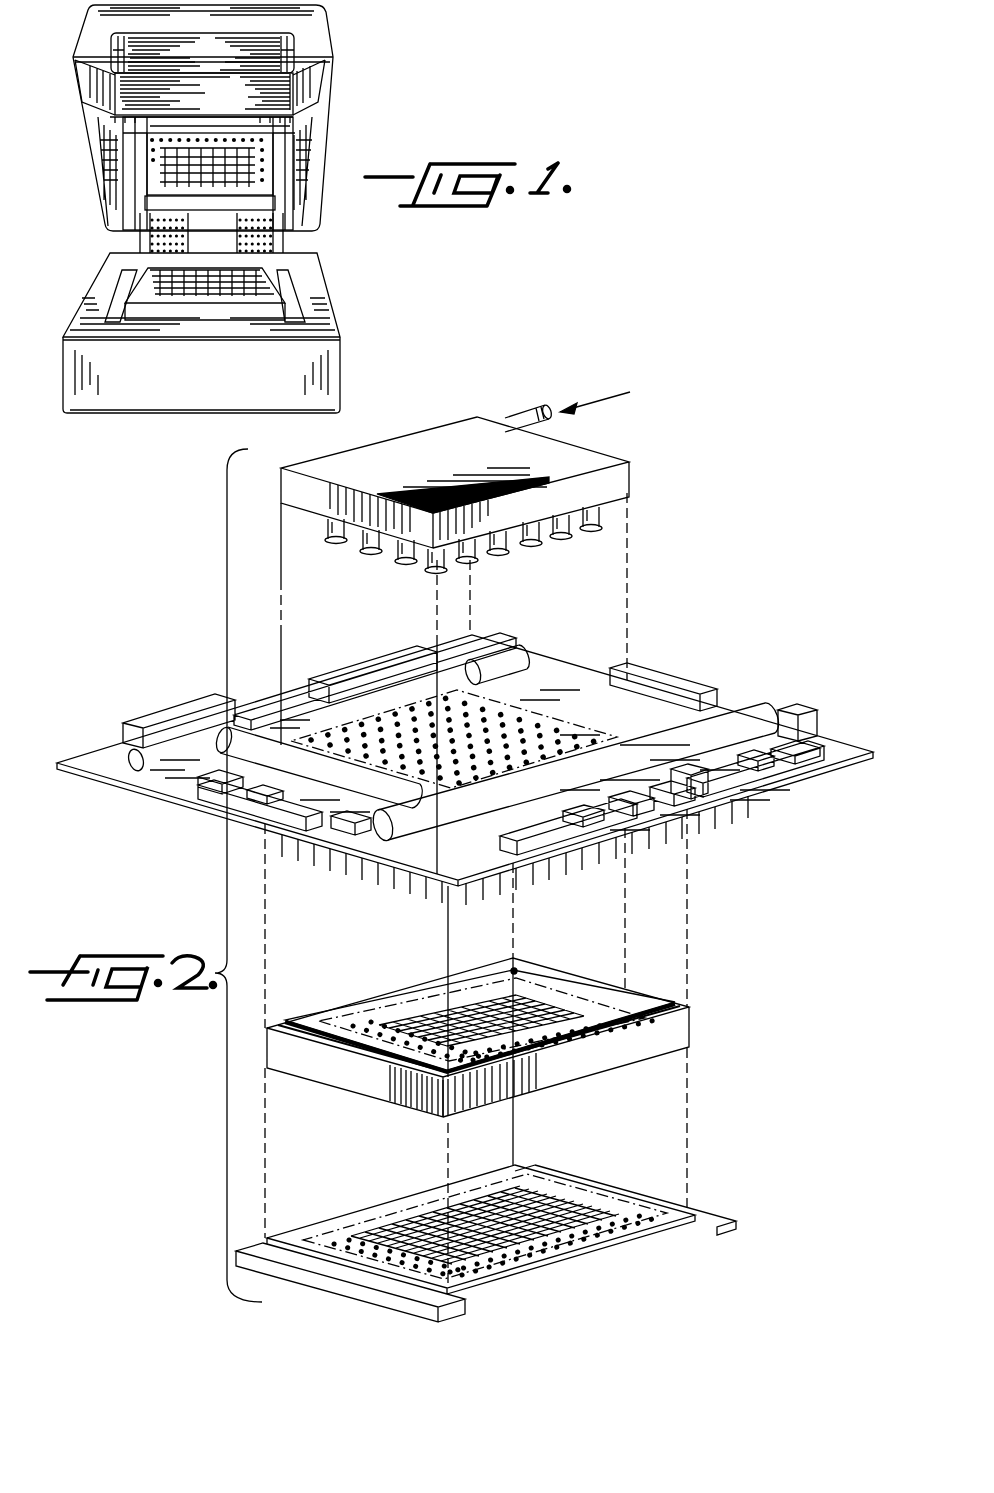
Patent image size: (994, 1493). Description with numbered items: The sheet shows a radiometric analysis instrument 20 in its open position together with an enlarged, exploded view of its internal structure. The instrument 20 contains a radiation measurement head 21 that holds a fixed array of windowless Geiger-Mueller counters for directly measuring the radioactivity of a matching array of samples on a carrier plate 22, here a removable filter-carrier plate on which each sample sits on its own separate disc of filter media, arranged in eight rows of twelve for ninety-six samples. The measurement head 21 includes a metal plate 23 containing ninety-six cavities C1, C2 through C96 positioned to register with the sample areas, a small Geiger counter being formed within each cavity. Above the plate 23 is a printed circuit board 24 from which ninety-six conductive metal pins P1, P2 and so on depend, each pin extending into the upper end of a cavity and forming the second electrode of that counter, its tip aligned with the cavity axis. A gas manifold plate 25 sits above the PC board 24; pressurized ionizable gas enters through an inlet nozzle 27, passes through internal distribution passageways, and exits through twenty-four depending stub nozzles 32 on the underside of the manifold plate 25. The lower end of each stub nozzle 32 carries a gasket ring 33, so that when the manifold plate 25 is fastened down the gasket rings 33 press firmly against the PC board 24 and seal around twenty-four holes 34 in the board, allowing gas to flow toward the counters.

In FIG. 1, the radiometric analysis instrument 20 is at (362, 113).
In FIG. 1, the radiation measurement head 21 is at (152, 176).
In FIG. 2, the radiation measurement head 21 is at (700, 1017).
In FIG. 1, the carrier plate 22 is at (138, 292).
In FIG. 2, the carrier plate 22 is at (602, 1230).
In FIG. 1, the metal plate 23 is at (143, 141).
In FIG. 2, the metal plate 23 is at (647, 1002).
In FIG. 2, the printed circuit board 24 is at (757, 790).
In FIG. 2, the gas manifold plate 25 is at (627, 478).
In FIG. 2, the inlet nozzle 27 is at (510, 418).
In FIG. 2, the stub nozzle 32 is at (612, 514).
In FIG. 2, the gasket ring 33 is at (603, 530).
In FIG. 2, the holes 34 is at (540, 723).
In FIG. 2, the conductive metal pin P1 is at (450, 900).
In FIG. 2, the conductive metal pin P2 is at (470, 898).
In FIG. 2, the cavity C1 is at (477, 1063).
In FIG. 2, the cavity C2 is at (530, 1067).
In FIG. 2, the cavity C96 is at (518, 968).